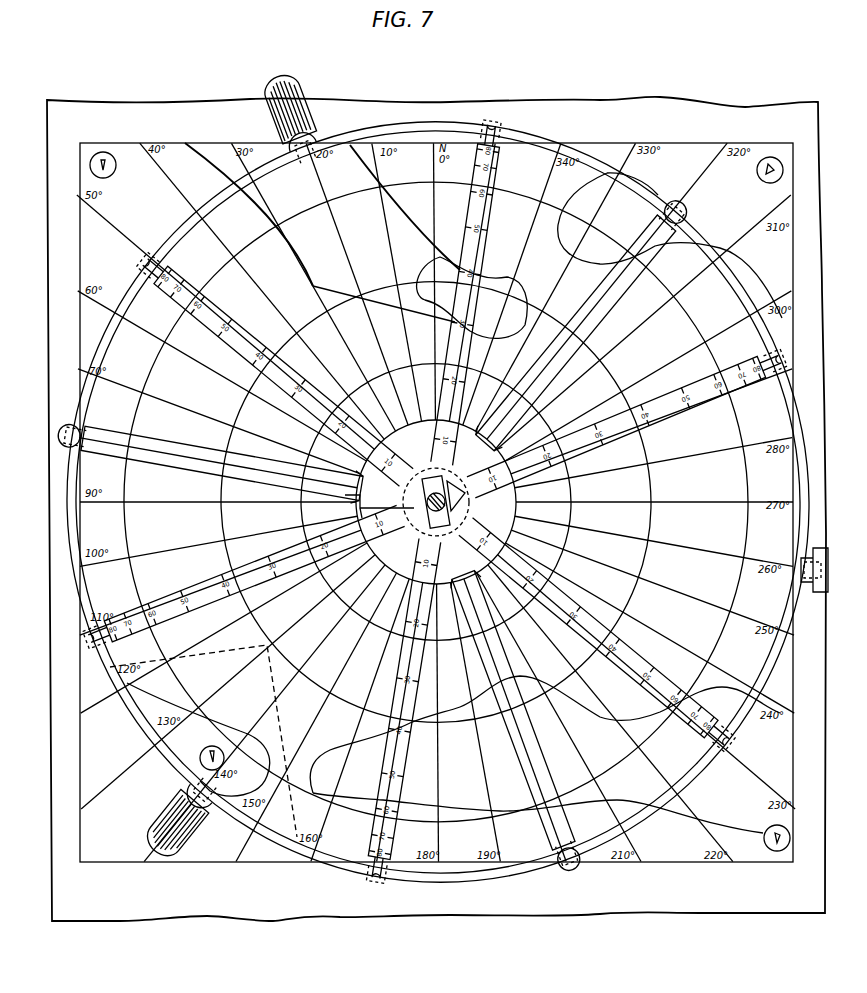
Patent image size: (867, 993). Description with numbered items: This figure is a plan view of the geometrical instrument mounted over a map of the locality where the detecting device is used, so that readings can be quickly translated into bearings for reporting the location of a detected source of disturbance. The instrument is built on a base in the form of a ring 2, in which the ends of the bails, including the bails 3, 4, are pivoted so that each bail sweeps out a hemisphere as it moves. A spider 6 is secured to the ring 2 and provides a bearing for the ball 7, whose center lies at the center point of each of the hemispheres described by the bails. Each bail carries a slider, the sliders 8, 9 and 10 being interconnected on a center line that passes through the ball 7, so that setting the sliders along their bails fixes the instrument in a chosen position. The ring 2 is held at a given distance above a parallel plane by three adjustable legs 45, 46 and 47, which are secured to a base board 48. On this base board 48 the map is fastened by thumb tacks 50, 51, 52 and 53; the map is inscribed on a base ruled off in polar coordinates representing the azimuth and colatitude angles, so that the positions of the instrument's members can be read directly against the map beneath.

The ring 2 is at (478, 878).
The bail 3 is at (386, 823).
The bail 4 is at (177, 606).
The spider 6 is at (162, 449).
The ball 7 is at (466, 478).
The slider 8 is at (442, 479).
The slider 9 is at (416, 505).
The slider 10 is at (428, 482).
The adjustable leg 45 is at (815, 594).
The adjustable leg 46 is at (316, 132).
The adjustable leg 47 is at (206, 811).
The base board 48 is at (564, 915).
The thumb tack 50 is at (775, 851).
The thumb tack 51 is at (771, 157).
The thumb tack 52 is at (108, 153).
The thumb tack 53 is at (200, 760).